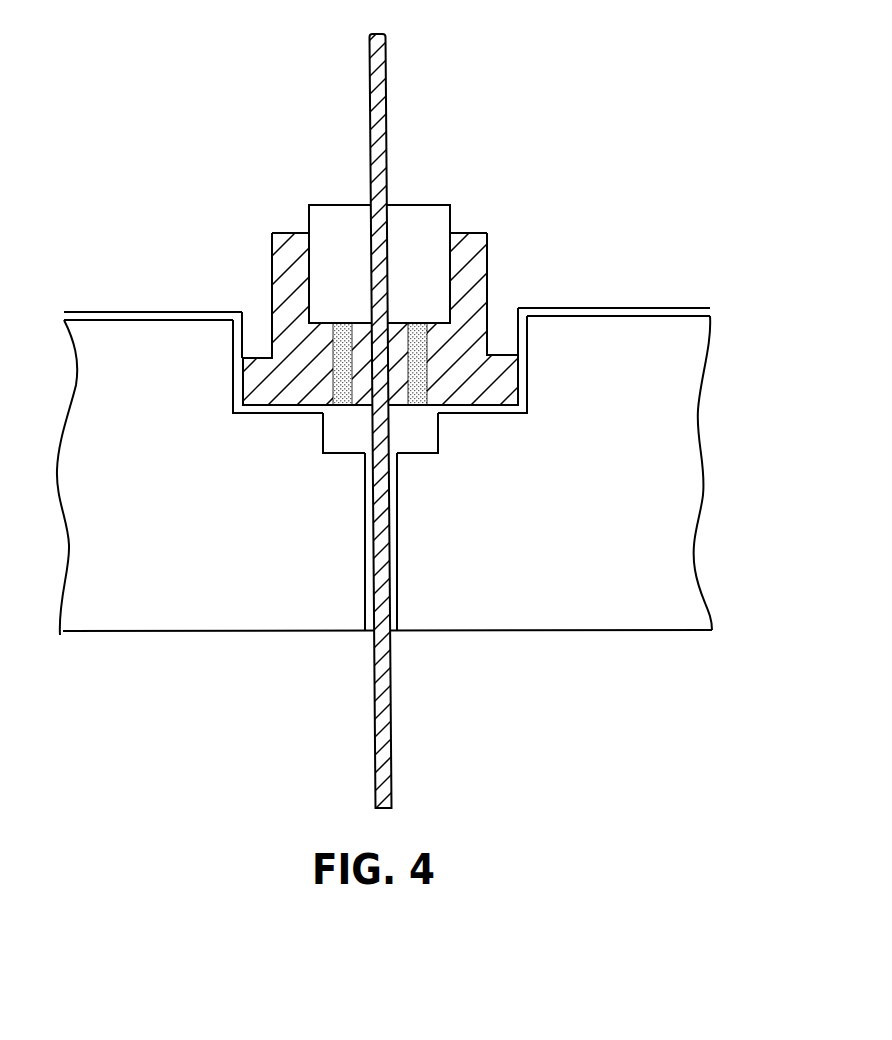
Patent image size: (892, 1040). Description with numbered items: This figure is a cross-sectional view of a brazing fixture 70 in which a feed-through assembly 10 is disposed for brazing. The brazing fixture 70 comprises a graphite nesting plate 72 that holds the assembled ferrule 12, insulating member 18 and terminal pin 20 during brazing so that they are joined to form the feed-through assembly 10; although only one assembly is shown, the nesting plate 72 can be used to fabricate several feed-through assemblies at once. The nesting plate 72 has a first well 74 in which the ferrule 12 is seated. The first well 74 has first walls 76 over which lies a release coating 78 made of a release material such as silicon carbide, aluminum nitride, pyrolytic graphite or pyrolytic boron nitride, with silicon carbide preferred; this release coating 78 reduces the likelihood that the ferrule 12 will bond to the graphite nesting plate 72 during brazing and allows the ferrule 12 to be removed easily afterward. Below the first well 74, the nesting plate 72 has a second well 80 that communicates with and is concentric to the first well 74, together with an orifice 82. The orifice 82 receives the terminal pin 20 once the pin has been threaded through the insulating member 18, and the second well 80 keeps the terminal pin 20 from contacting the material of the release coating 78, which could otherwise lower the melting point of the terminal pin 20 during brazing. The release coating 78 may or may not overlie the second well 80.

The feed-through assembly 10 is at (382, 262).
The ferrule 12 is at (488, 267).
The insulating member 18 is at (432, 222).
The terminal pin 20 is at (380, 107).
The brazing fixture 70 is at (428, 475).
The graphite nesting plate 72 is at (675, 532).
The first well 74 is at (402, 363).
The first walls 76 is at (233, 338).
The release coating 78 is at (93, 317).
The second well 80 is at (401, 521).
The orifice 82 is at (390, 602).